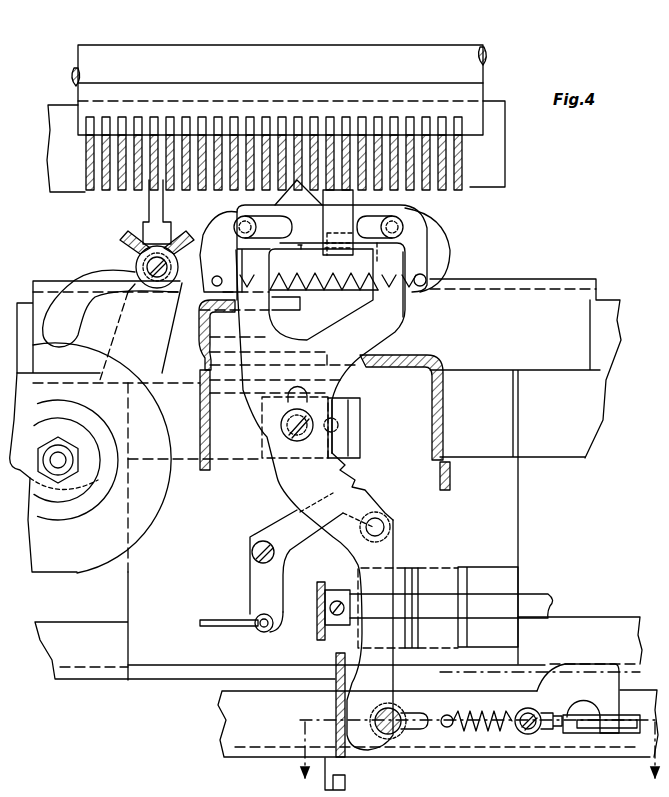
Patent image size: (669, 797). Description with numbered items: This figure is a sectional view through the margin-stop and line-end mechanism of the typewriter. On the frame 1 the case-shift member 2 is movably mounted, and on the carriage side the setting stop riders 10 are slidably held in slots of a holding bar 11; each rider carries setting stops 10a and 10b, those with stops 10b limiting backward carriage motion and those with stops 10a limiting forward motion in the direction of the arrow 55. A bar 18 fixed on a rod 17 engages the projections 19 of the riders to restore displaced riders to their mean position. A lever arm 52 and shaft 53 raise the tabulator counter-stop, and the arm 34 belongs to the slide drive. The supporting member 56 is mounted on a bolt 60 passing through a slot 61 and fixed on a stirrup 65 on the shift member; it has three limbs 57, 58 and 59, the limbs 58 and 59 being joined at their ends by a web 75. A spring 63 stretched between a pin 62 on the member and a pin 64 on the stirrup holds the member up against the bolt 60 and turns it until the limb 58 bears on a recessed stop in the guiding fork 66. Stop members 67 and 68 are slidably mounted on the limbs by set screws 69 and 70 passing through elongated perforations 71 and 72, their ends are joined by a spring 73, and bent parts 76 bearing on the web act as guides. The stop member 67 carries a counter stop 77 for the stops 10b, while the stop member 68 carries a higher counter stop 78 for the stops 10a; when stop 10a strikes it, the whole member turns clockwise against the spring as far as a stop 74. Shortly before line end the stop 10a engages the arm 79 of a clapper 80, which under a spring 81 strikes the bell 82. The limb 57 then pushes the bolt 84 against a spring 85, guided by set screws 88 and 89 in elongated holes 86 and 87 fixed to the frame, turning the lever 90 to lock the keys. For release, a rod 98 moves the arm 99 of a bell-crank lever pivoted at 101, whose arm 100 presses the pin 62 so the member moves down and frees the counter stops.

The frame 1 is at (222, 722).
The case-shift member 2 is at (582, 440).
The setting stop rider 10 is at (86, 163).
The setting stop 10a is at (64, 192).
The setting stop 10b is at (475, 192).
The holding bar 11 is at (500, 168).
The rod 17 is at (486, 62).
The bar 18 is at (470, 92).
The projection 19 is at (465, 127).
The arm 34 is at (451, 482).
The lever arm 52 is at (337, 590).
The shaft 53 is at (445, 612).
The arrow 55 is at (388, 24).
The supporting member 56 is at (282, 472).
The limb 57 is at (370, 742).
The limb 58 is at (270, 340).
The limb 59 is at (385, 322).
The bolt 60 is at (282, 427).
The slot 61 is at (286, 396).
The pin 62 is at (391, 526).
The spring 63 is at (362, 477).
The pin 64 is at (340, 427).
The stirrup 65 is at (352, 408).
The guiding fork 66 is at (200, 328).
The stop member 67 is at (208, 243).
The stop member 68 is at (440, 250).
The set screw 69 is at (245, 240).
The set screw 70 is at (428, 262).
The elongated perforation 71 is at (275, 225).
The elongated perforation 72 is at (425, 230).
The spring 73 is at (340, 288).
The stop 74 is at (375, 365).
The web 75 is at (420, 210).
The bent part 76 is at (335, 252).
The counter stop 77 is at (357, 215).
The counter stop 78 is at (262, 210).
The arm 79 is at (149, 208).
The clapper 80 is at (92, 278).
The spring 81 is at (142, 262).
The bell 82 is at (78, 354).
The bolt 84 is at (606, 690).
The spring 85 is at (478, 731).
The elongated hole 86 is at (412, 731).
The elongated hole 87 is at (556, 727).
The set screw 88 is at (398, 718).
The set screw 89 is at (530, 727).
The lever 90 is at (628, 734).
The rod 98 is at (228, 621).
The arm 99 is at (257, 582).
The arm 100 is at (275, 533).
The pivot 101 is at (252, 553).